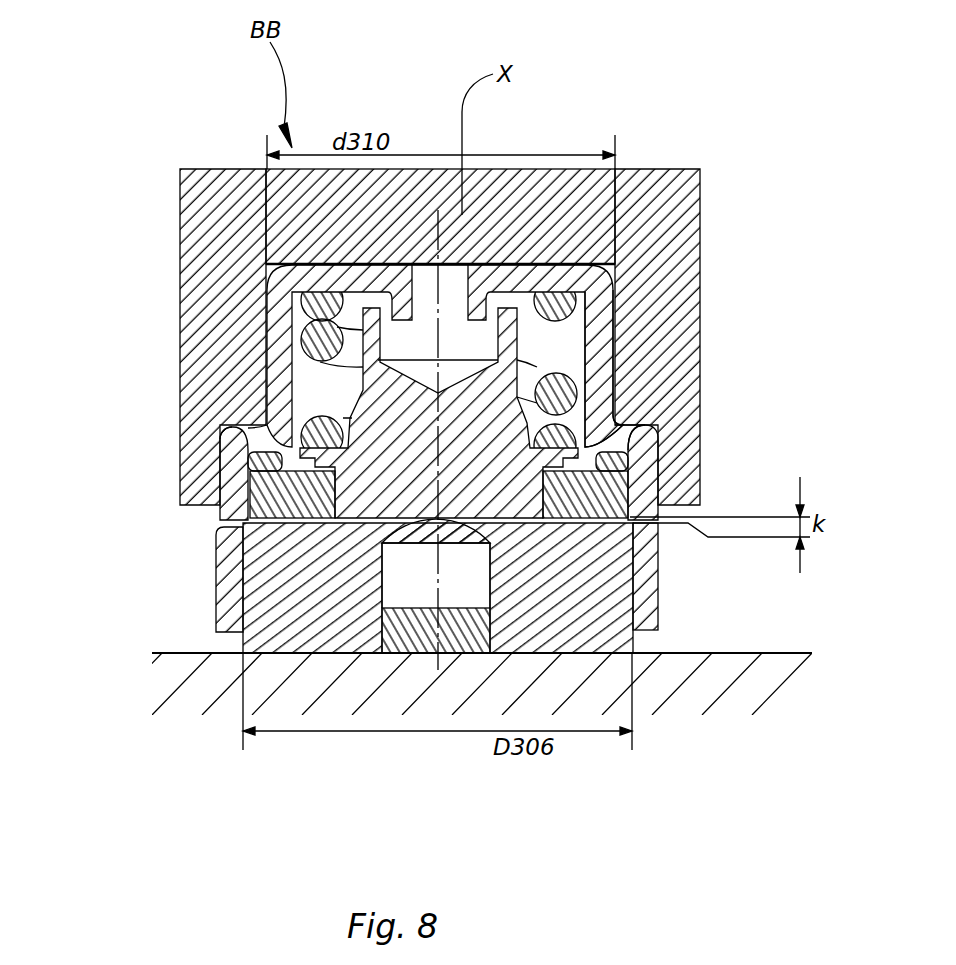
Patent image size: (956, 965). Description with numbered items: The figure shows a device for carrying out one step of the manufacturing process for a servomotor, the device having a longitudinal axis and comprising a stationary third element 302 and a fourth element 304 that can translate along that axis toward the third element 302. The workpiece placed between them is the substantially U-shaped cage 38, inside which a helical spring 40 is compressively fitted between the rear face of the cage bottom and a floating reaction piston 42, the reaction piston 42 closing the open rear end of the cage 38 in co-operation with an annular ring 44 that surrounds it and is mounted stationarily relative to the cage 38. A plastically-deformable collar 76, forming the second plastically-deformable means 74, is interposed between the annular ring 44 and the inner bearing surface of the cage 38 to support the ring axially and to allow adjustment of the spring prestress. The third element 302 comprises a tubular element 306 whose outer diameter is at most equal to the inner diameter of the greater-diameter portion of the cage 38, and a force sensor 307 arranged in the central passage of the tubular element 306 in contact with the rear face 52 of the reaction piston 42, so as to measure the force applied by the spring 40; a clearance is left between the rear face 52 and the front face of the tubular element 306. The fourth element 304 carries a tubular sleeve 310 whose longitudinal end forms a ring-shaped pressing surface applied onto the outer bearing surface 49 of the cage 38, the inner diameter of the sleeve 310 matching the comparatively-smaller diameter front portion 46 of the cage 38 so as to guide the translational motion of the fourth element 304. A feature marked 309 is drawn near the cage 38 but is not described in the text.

The fourth element 304 is at (180, 235).
The tubular sleeve 310 is at (210, 285).
The helical spring 40 is at (650, 268).
The comparatively-smaller diameter front portion 46 is at (267, 340).
The outer bearing surface 49 is at (625, 423).
The reaction piston 42 is at (378, 405).
The lip 309 is at (219, 445).
The cage 38 is at (215, 458).
The second plastically-deformable means 74 is at (640, 425).
The plastically-deformable collar 76 is at (628, 438).
The annular ring 44 is at (216, 528).
The rear face 52 is at (490, 524).
The third element 302 is at (232, 652).
The tubular element 306 is at (305, 622).
The force sensor 307 is at (383, 642).